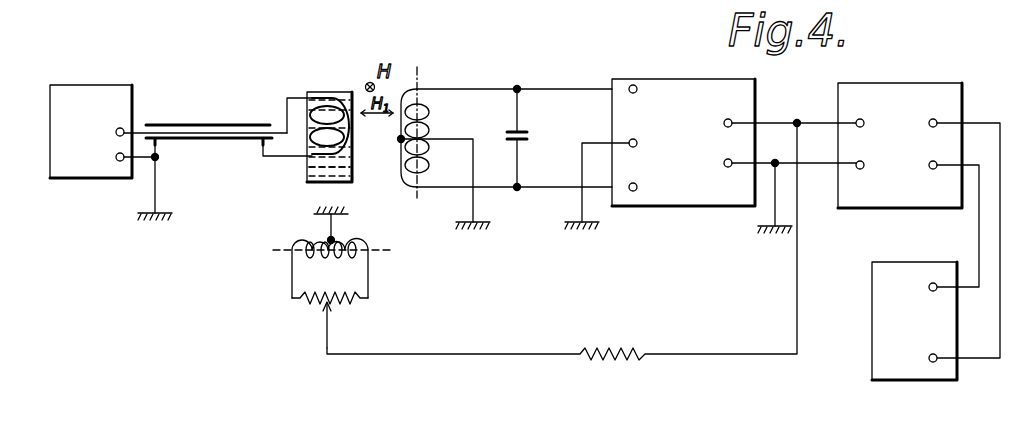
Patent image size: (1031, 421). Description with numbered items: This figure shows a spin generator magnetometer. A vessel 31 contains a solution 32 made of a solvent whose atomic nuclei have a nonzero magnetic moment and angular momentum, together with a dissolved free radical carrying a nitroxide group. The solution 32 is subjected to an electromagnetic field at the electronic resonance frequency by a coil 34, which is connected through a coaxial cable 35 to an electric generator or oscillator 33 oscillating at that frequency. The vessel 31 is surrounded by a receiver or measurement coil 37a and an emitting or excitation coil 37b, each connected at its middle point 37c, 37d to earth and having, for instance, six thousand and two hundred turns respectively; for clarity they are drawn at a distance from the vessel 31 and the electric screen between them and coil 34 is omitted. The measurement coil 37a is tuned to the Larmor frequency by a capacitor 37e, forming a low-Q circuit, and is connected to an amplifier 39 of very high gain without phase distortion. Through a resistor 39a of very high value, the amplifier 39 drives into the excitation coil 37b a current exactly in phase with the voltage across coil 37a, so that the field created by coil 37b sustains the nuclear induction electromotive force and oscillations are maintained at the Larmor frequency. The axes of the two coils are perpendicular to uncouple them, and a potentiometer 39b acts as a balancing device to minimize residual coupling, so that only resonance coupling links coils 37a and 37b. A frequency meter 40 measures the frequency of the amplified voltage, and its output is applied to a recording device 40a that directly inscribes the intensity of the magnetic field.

The vessel 31 is at (342, 97).
The solution 32 is at (318, 165).
The electric generator or oscillator 33 is at (151, 80).
The coil 34 is at (322, 98).
The coaxial cable 35 is at (230, 105).
The receiver or measurement coil 37a is at (430, 128).
The emitting or excitation coil 37b is at (352, 243).
The middle point of coil 37a 37c is at (401, 139).
The middle point of coil 37b 37d is at (330, 240).
The capacitor 37e is at (523, 136).
The amplifier 39 is at (661, 80).
The resistor 39a is at (602, 349).
The potentiometer 39b is at (331, 304).
The frequency meter 40 is at (896, 86).
The recording device 40a is at (873, 351).